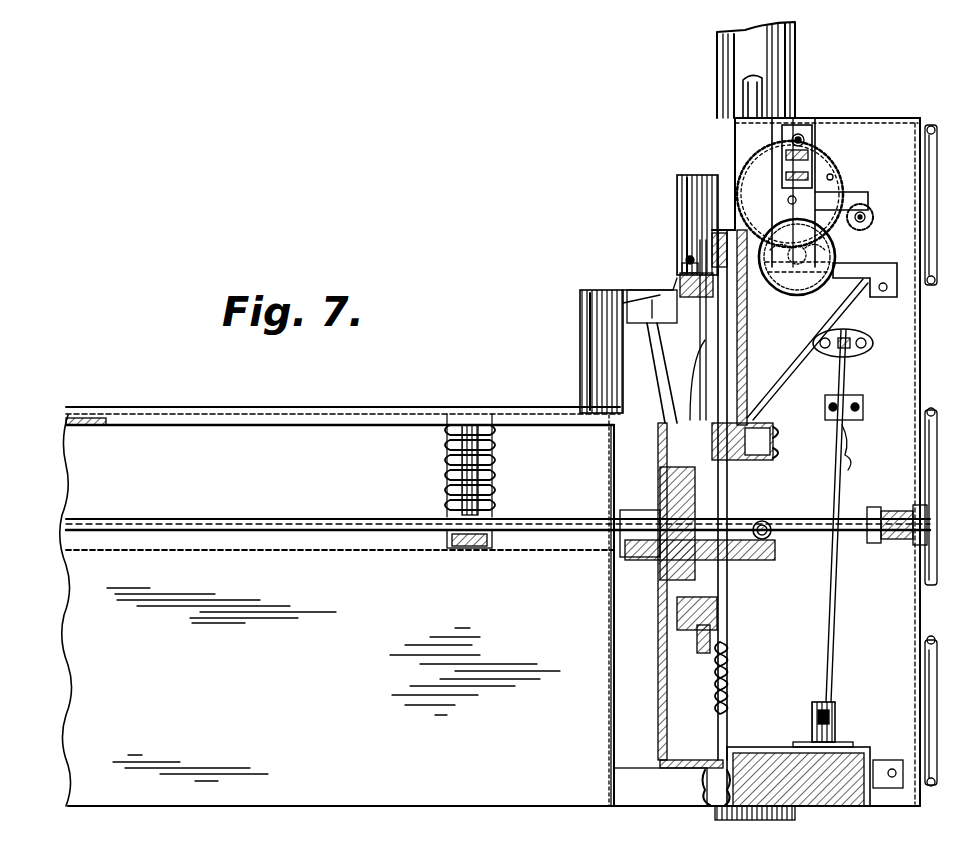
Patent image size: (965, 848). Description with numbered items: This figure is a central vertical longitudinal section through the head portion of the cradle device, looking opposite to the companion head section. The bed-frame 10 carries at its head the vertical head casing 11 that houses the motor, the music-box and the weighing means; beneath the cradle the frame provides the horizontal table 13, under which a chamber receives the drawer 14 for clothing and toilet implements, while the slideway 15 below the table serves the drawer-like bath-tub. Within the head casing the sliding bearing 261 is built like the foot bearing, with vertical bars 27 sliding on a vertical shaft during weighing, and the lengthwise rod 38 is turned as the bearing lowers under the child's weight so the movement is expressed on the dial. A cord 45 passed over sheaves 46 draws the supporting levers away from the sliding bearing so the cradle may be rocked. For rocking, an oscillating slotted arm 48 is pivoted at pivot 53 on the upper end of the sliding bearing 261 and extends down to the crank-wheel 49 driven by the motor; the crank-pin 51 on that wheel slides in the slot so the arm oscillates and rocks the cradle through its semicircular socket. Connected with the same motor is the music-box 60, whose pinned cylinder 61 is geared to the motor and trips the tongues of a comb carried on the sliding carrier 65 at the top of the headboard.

The bed-frame 10 is at (795, 56).
The head casing 11 is at (922, 589).
The horizontal table 13 is at (302, 413).
The drawer 14 is at (310, 610).
The slideway 15 is at (609, 672).
The vertical bars 27 is at (748, 348).
The rod 38 is at (248, 518).
The cord 45 is at (835, 610).
The sheaves 46 is at (844, 330).
The oscillating slotted arm 48 is at (704, 655).
The crank-wheel 49 is at (691, 630).
The crank-pin 51 is at (720, 610).
The pivot 53 is at (670, 292).
The sliding bearing 261 is at (680, 275).
The music-box 60 is at (817, 269).
The cylinder 61 is at (798, 294).
The sliding carrier 65 is at (812, 157).